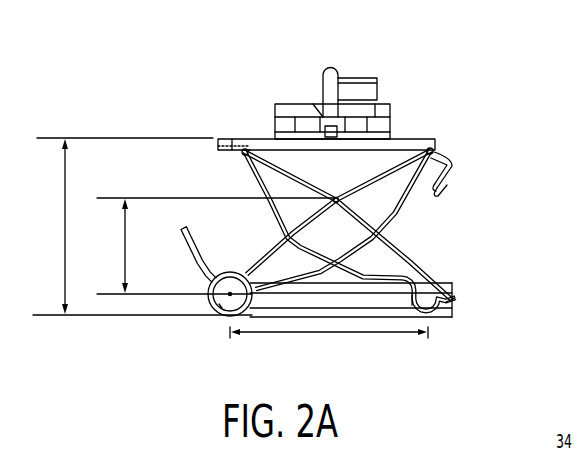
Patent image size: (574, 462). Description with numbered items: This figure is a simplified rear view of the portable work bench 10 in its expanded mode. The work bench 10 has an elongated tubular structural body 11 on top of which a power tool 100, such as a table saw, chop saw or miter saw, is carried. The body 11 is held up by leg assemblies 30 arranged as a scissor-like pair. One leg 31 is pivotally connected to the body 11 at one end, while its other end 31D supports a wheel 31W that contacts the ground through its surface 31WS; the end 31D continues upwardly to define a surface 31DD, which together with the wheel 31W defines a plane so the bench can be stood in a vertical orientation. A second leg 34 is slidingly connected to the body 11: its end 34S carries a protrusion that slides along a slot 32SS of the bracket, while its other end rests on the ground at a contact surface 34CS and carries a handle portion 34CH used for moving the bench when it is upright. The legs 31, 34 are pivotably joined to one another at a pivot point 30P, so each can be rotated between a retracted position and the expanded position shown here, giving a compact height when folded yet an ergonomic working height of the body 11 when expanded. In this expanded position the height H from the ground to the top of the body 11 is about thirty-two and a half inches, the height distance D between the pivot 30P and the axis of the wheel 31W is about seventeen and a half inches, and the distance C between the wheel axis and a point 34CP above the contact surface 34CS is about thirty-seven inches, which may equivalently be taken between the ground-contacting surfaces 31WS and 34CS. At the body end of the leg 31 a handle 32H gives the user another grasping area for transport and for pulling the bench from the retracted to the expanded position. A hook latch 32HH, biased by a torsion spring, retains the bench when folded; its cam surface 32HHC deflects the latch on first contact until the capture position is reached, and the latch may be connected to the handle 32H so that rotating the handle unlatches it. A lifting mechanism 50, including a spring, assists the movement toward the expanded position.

The portable work bench 10 is at (500, 182).
The structural body 11 is at (401, 147).
The power tool 100 is at (376, 110).
The leg assemblies 30 is at (374, 232).
The pivot point 30P is at (252, 166).
The leg 31 is at (412, 186).
The other end of leg 31D is at (193, 250).
The surface 31DD is at (194, 234).
The wheel 31W is at (215, 316).
The surface of wheel 31WS is at (230, 317).
The handle 32H is at (455, 162).
The hook latch 32HH is at (438, 150).
The cam surface 32HHC is at (446, 188).
The slot 32SS is at (228, 138).
The leg 34 is at (381, 284).
The end of leg 34S is at (251, 149).
The point above contact surface 34CP is at (421, 320).
The contact surface 34CS is at (431, 318).
The handle portion 34CH is at (455, 301).
The lifting mechanism 50 is at (328, 300).
The distance C is at (262, 333).
The height distance D is at (125, 242).
The height H is at (65, 214).